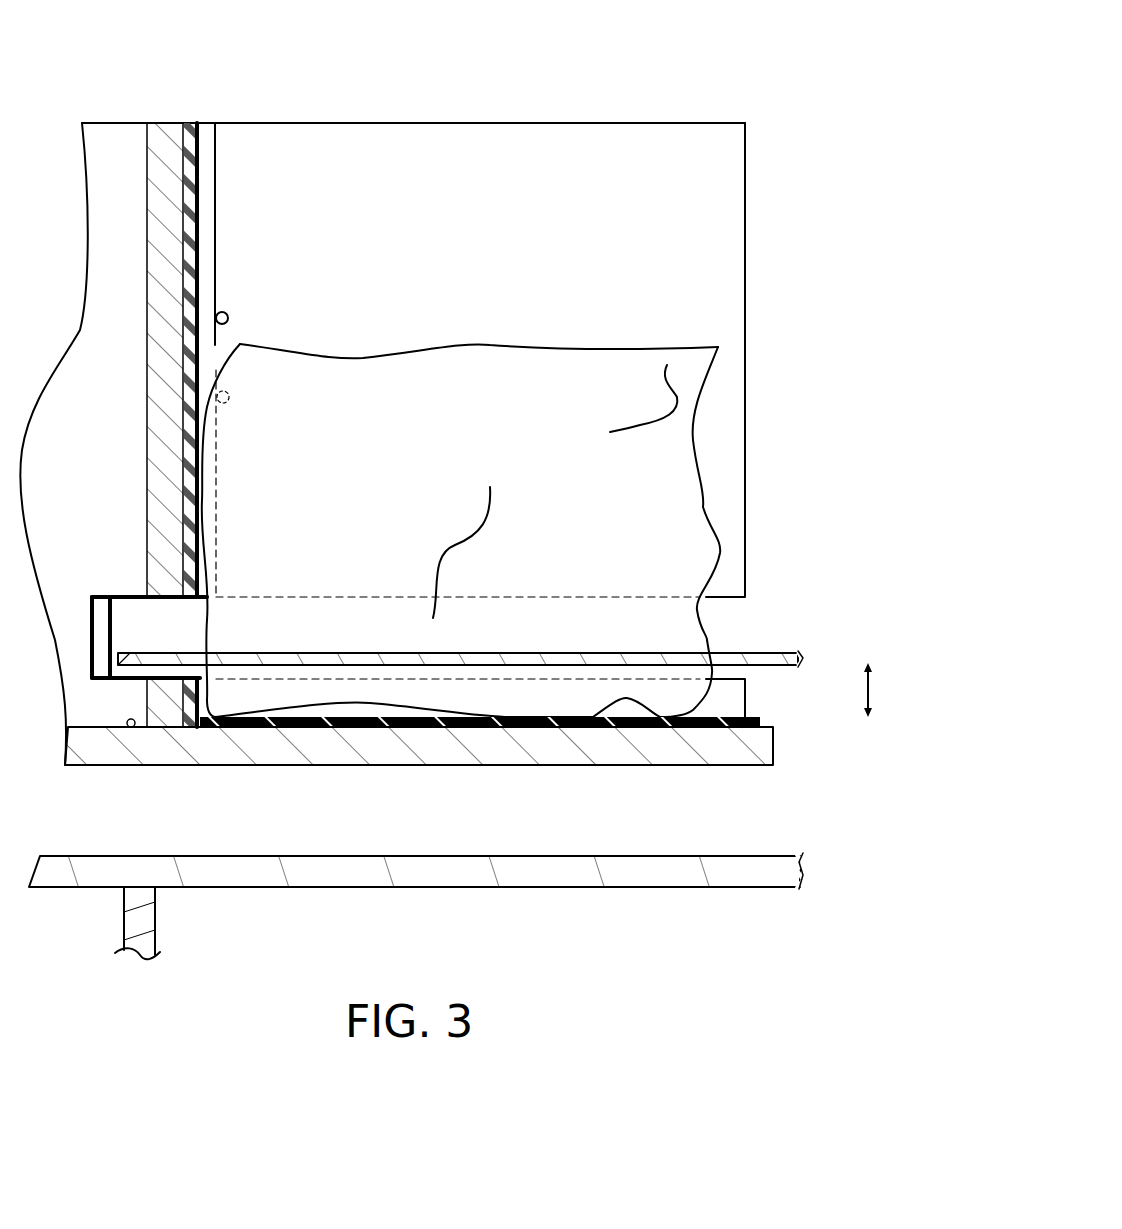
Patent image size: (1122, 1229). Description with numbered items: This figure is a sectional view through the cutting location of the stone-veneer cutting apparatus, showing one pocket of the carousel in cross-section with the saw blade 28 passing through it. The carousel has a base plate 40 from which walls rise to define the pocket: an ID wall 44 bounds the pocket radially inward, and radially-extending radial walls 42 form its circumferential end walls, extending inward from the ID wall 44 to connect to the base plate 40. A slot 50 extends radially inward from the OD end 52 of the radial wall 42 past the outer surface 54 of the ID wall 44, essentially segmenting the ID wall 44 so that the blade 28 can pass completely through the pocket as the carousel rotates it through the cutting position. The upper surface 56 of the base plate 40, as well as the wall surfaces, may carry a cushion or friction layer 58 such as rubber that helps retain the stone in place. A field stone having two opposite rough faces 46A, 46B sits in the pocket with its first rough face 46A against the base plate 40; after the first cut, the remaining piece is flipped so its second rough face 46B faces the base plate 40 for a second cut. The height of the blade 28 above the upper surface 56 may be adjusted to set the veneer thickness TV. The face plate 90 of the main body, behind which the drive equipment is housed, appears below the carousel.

The shelf 28 is at (514, 656).
The base plate 40 is at (728, 753).
The radial wall 42 is at (122, 159).
The ID wall 44 is at (160, 413).
The rough face 46A is at (623, 703).
The rough face 46B is at (488, 343).
The slot 50 is at (727, 623).
The OD end 52 is at (745, 428).
The outer surface 54 is at (185, 219).
The upper surface 56 is at (760, 718).
The cushion/friction layer 58 is at (748, 720).
The face plate 90 is at (700, 873).
The veneer thickness TV is at (872, 690).